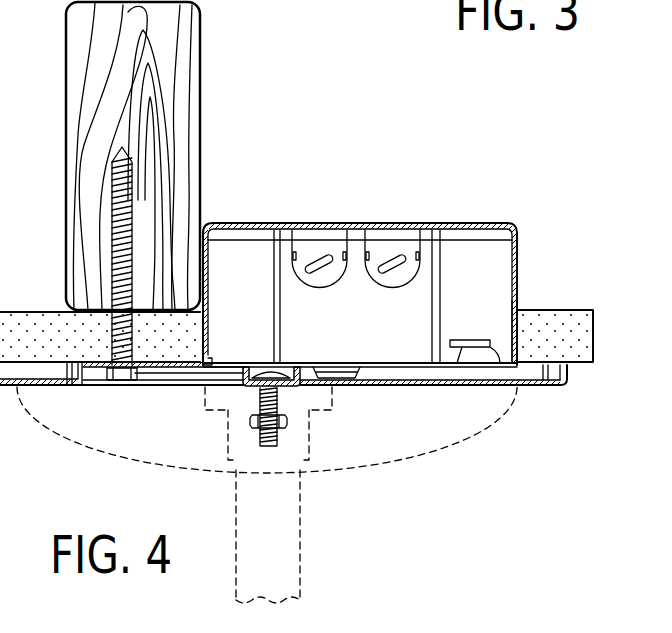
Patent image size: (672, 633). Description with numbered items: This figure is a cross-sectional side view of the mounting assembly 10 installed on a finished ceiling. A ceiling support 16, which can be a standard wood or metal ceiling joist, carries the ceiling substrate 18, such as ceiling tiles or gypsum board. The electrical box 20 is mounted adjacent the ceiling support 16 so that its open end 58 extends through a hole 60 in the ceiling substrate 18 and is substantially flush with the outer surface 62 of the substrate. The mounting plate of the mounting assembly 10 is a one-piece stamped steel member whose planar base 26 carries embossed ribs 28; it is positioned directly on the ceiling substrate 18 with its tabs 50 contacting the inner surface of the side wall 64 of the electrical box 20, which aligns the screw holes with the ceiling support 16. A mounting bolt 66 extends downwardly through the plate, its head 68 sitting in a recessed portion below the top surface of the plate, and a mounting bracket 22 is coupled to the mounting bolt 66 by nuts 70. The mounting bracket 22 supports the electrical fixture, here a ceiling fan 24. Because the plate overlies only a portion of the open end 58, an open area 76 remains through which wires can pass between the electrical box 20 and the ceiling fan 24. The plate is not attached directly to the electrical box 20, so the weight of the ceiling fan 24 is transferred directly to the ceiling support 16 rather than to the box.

In FIG. 4, the mounting assembly 10 is at (555, 391).
In FIG. 4, the ceiling support 16 is at (201, 91).
In FIG. 3, the ceiling substrate 18 is at (664, 12).
In FIG. 4, the ceiling substrate 18 is at (578, 307).
In FIG. 4, the electrical box 20 is at (518, 248).
In FIG. 4, the mounting bracket 22 is at (313, 442).
In FIG. 4, the ceiling fan 24 is at (366, 470).
In FIG. 4, the planar base 26 is at (160, 370).
In FIG. 4, the embossed ribs 28 is at (108, 386).
In FIG. 4, the tabs 50 is at (214, 357).
In FIG. 4, the open end 58 is at (392, 363).
In FIG. 4, the hole 60 is at (518, 307).
In FIG. 4, the outer surface 62 is at (583, 364).
In FIG. 4, the side wall 64 is at (209, 270).
In FIG. 4, the mounting bolt 66 is at (262, 444).
In FIG. 4, the head 68 is at (262, 362).
In FIG. 4, the nuts 70 is at (250, 425).
In FIG. 4, the open area 76 is at (403, 367).